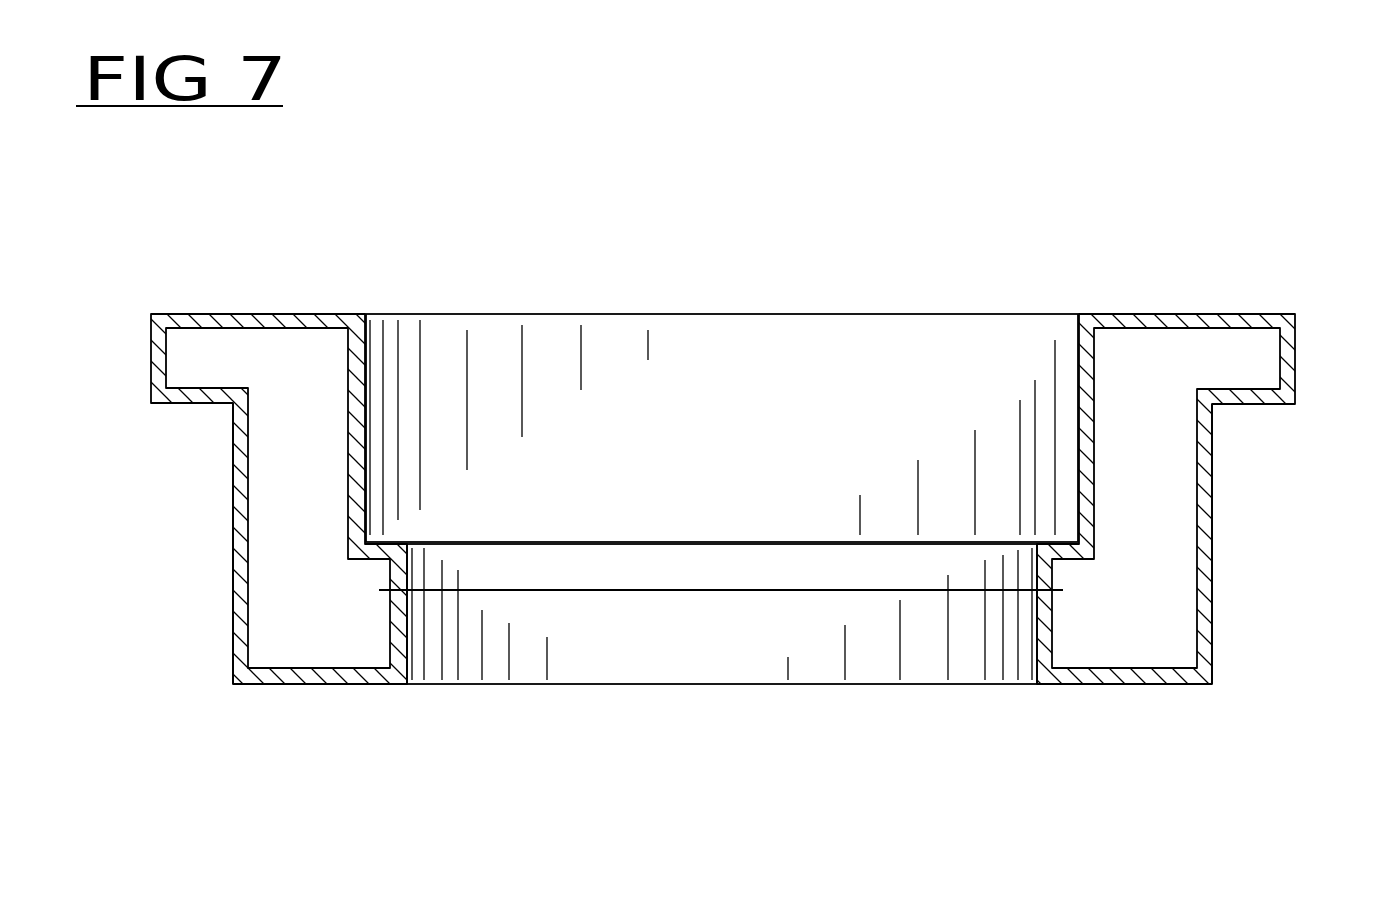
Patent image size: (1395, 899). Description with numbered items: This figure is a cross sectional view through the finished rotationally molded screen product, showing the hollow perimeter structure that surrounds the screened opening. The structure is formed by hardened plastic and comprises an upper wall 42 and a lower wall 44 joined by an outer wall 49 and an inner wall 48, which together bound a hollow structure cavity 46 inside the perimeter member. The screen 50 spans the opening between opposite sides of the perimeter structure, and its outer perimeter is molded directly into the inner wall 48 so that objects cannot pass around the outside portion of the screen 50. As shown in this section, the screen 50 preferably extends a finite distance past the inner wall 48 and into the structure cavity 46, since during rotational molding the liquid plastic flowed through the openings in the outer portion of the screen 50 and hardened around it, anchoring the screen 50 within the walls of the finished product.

The upper wall 42 is at (333, 314).
The lower wall 44 is at (300, 684).
The structure cavity 46 is at (283, 500).
The inner wall 48 is at (587, 640).
The outer wall 49 is at (232, 585).
The screen 50 is at (728, 591).